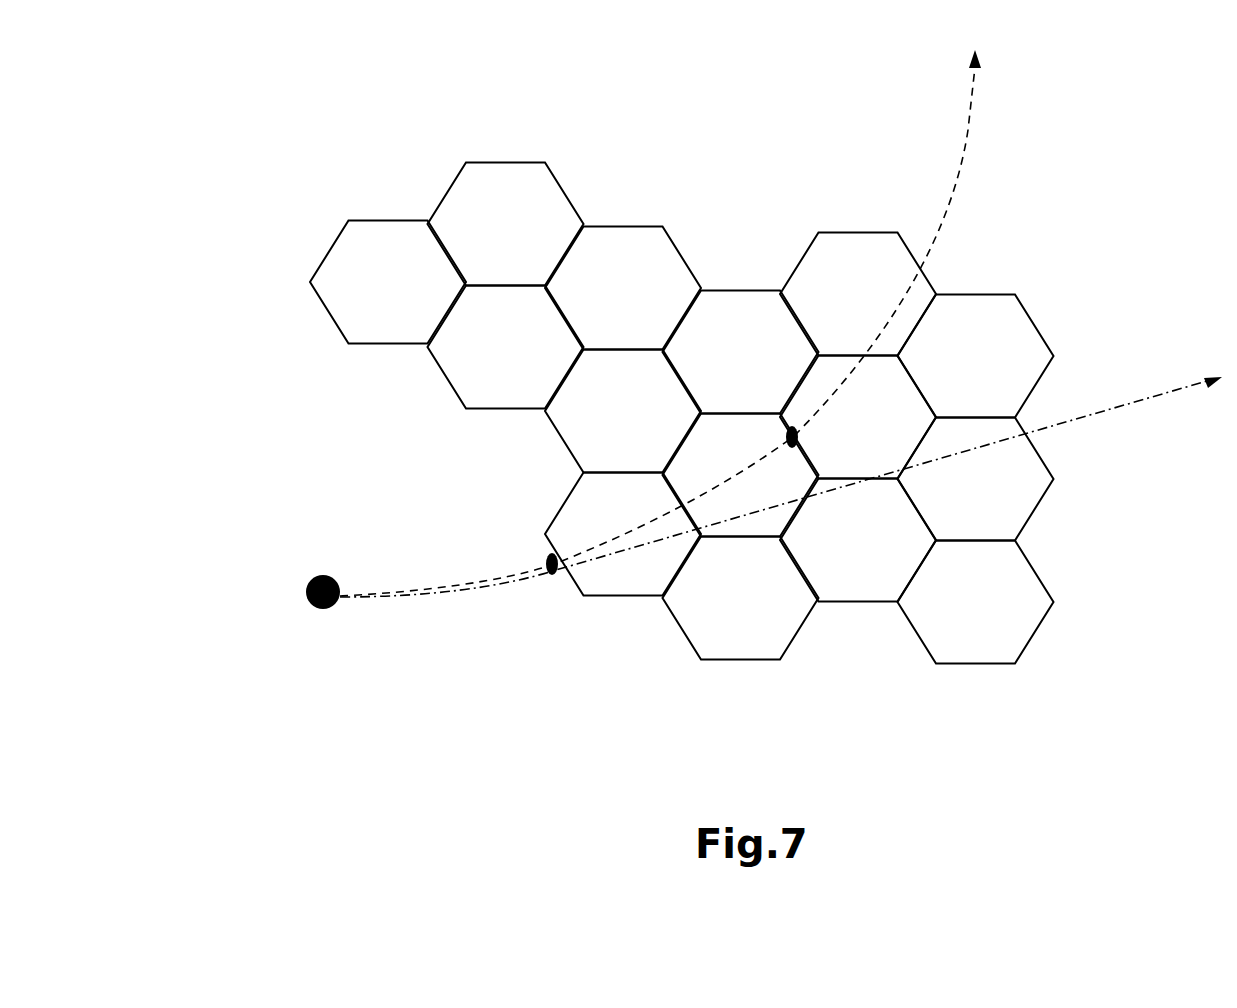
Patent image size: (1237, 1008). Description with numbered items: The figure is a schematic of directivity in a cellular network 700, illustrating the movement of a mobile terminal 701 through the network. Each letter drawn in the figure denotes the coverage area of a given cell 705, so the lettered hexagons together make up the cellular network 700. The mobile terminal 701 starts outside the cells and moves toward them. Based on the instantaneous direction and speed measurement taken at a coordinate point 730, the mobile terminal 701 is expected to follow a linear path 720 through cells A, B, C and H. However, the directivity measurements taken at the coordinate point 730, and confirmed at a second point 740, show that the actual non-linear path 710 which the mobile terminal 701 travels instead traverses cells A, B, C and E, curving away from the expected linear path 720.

The cellular network 700 is at (646, 413).
The mobile terminal 701 is at (323, 645).
The cell 705 is at (472, 373).
The non-linear path 710 is at (968, 135).
The linear path 720 is at (1067, 420).
The coordinate point 730 is at (542, 573).
The point 740 is at (792, 427).